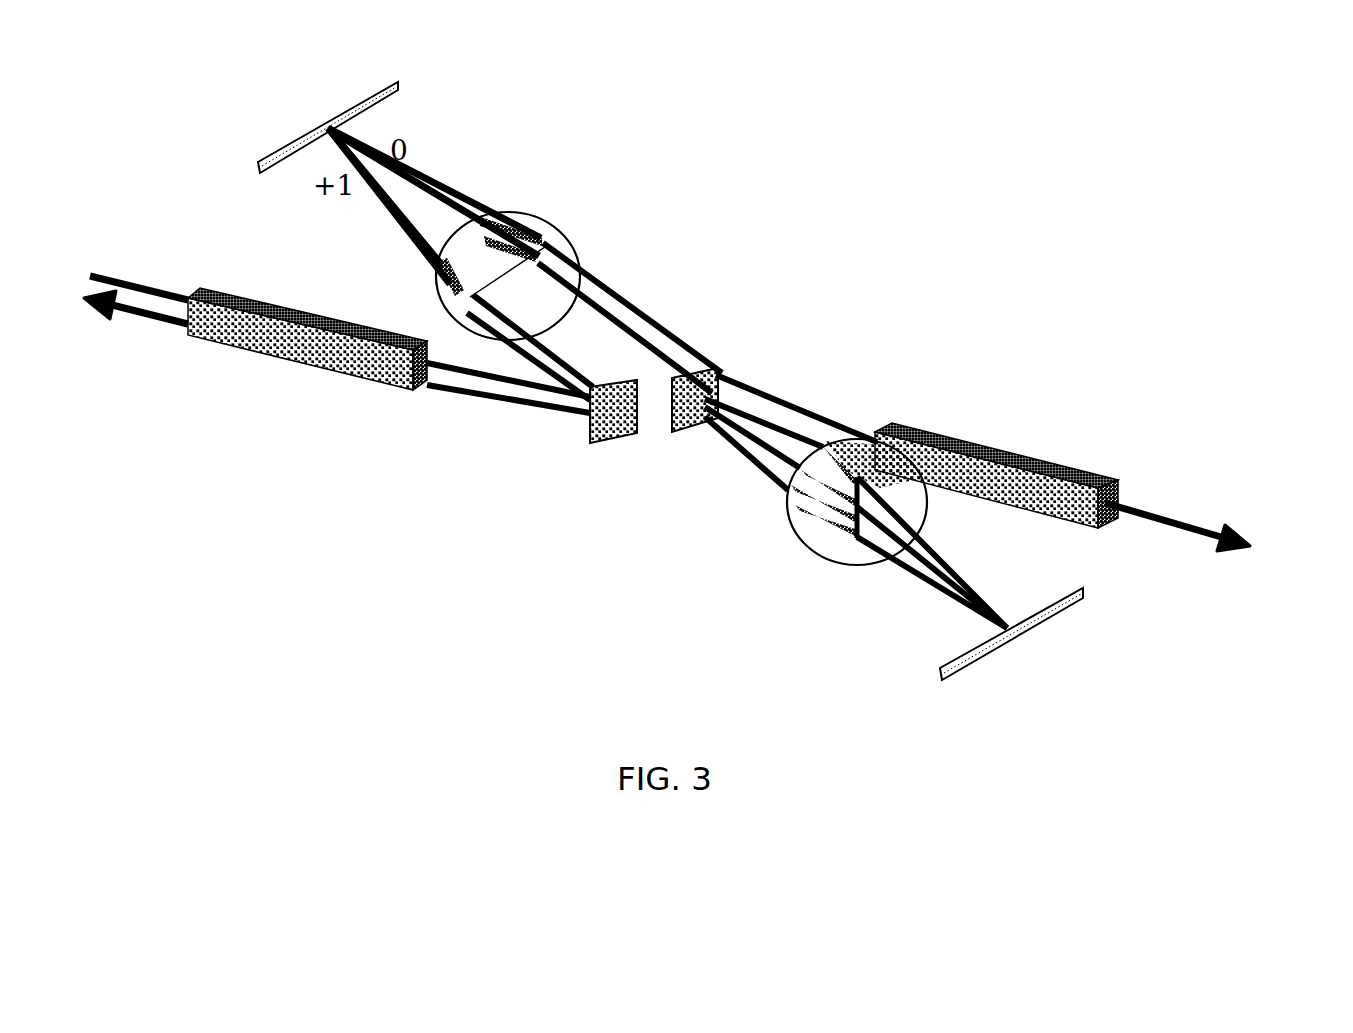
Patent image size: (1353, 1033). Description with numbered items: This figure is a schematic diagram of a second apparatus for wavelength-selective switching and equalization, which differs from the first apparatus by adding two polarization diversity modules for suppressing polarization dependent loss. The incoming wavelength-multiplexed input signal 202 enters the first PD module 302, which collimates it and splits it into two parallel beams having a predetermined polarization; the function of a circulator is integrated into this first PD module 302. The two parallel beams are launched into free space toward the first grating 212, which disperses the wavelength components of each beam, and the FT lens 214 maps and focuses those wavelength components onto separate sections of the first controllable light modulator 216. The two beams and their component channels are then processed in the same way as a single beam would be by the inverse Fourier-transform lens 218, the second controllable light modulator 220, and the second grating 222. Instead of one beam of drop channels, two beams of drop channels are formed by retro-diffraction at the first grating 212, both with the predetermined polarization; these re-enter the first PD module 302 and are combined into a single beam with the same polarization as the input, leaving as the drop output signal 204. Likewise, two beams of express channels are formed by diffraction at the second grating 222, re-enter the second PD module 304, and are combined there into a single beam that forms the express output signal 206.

The wavelength-multiplexed input signal 202 is at (133, 250).
The wavelength-multiplexed output signal 204 is at (134, 346).
The wavelength-multiplexed output signal 206 is at (1215, 501).
The first grating 212 is at (612, 451).
The FT lens 214 is at (520, 247).
The first controllable light modulator 216 is at (296, 109).
The FT^-1 lens 218 is at (897, 549).
The second controllable light modulator 220 is at (1085, 649).
The second grating 222 is at (746, 360).
The first PD module 302 is at (307, 373).
The second PD module 304 is at (1001, 459).